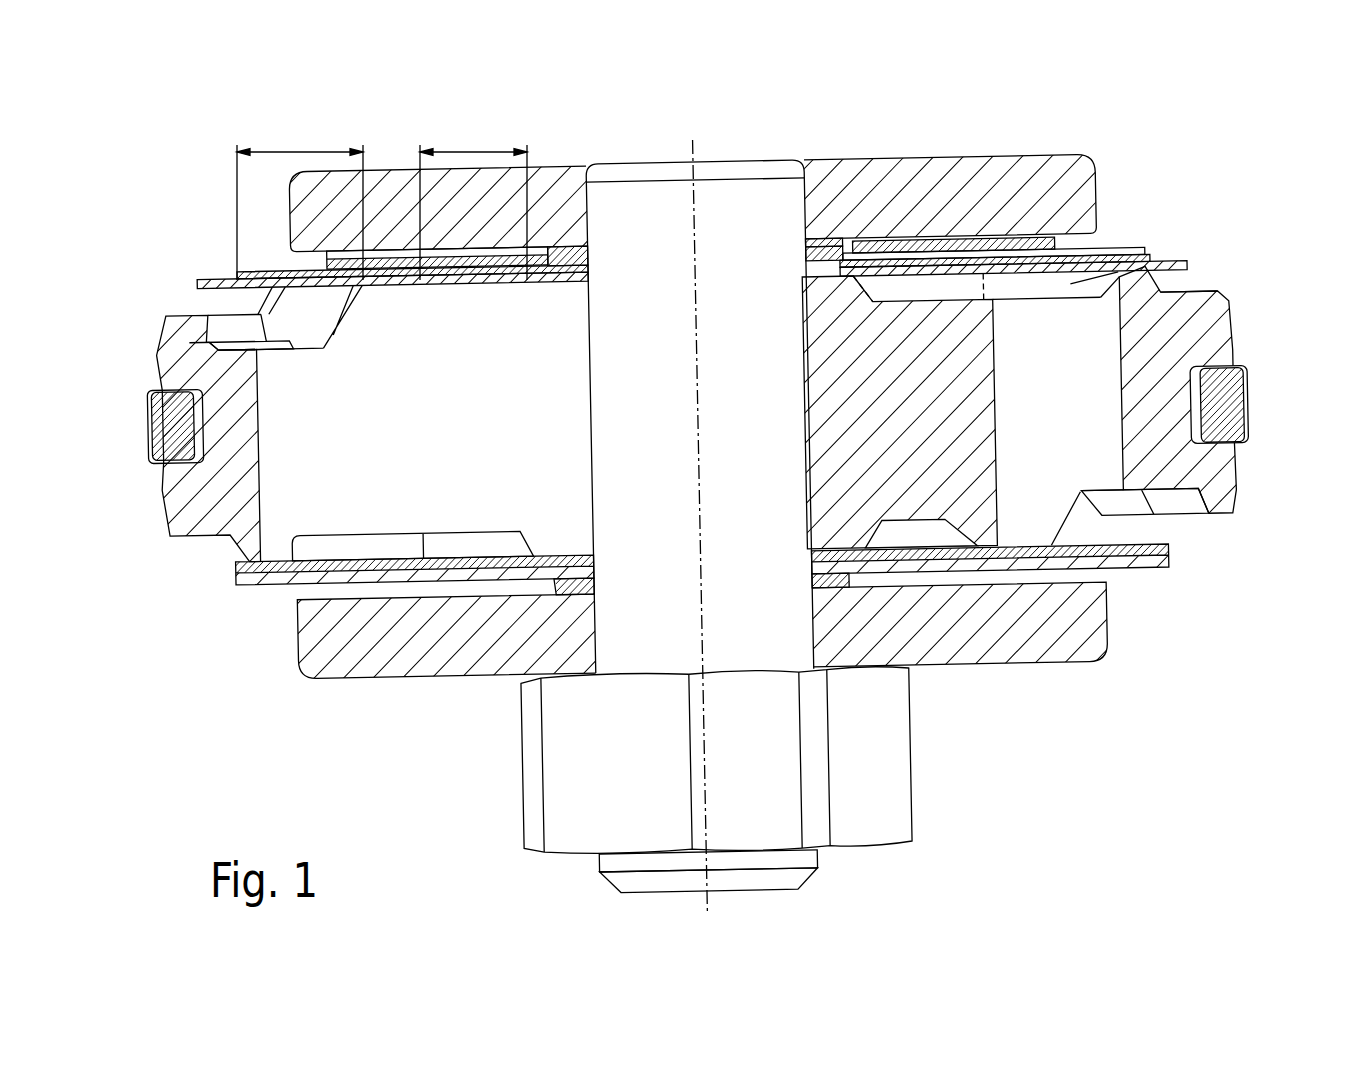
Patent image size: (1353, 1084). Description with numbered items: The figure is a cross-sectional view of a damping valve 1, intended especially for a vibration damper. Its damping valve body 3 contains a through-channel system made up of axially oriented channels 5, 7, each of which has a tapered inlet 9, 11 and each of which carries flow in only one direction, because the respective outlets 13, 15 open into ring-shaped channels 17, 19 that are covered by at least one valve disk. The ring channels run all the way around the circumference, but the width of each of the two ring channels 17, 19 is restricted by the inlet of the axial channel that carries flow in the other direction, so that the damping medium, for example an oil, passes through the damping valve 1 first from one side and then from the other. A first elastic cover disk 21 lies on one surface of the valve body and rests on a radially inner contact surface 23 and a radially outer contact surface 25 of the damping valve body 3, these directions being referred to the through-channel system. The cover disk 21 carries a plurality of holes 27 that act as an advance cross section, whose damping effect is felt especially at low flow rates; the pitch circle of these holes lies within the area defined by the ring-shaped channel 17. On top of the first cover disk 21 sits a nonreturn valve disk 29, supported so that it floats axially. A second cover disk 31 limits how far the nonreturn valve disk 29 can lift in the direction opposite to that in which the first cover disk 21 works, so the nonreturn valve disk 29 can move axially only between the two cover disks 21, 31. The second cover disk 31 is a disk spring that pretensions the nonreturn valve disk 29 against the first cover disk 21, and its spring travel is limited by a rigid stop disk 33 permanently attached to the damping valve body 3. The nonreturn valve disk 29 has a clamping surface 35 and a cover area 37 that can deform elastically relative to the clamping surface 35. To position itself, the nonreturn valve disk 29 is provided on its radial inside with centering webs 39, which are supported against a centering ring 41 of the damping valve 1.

The damping valve 1 is at (676, 516).
The damping valve body 3 is at (1200, 353).
The axially oriented channel 5 is at (1087, 463).
The axially oriented channel 7 is at (303, 493).
The tapered inlet 9 is at (1171, 509).
The tapered inlet 11 is at (230, 322).
The outlet 13 is at (1065, 301).
The outlet 15 is at (398, 526).
The ring-shaped channel 17 is at (1075, 281).
The ring-shaped channel 19 is at (315, 552).
The first elastic cover disk 21 is at (1177, 256).
The radially inner contact surface 23 is at (848, 275).
The radially outer contact surface 25 is at (1163, 294).
The holes 27 is at (897, 278).
The nonreturn valve disk 29 is at (1133, 254).
The second cover disk 31 is at (1055, 238).
The rigid stop disk 33 is at (1063, 182).
The clamping surface 35 is at (300, 201).
The cover area 37 is at (473, 201).
The centering webs 39 is at (853, 243).
The centering ring 41 is at (807, 237).